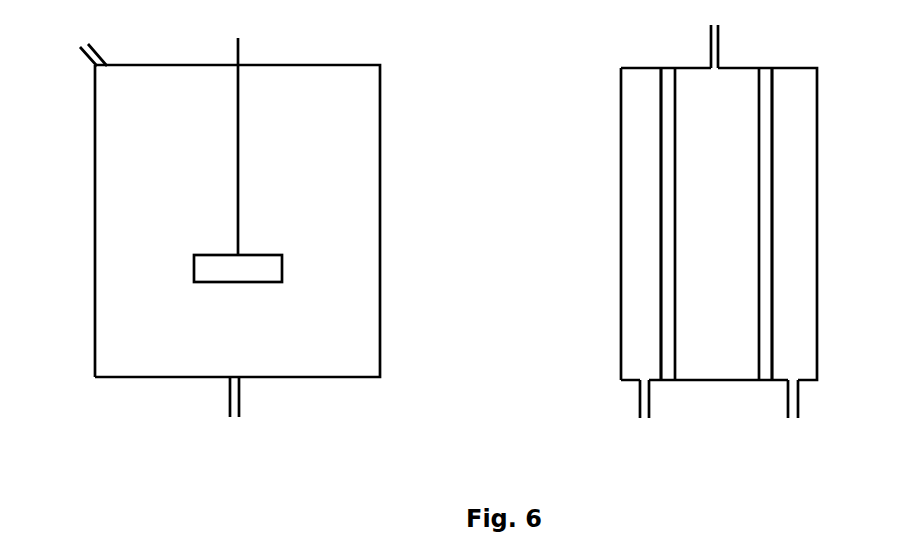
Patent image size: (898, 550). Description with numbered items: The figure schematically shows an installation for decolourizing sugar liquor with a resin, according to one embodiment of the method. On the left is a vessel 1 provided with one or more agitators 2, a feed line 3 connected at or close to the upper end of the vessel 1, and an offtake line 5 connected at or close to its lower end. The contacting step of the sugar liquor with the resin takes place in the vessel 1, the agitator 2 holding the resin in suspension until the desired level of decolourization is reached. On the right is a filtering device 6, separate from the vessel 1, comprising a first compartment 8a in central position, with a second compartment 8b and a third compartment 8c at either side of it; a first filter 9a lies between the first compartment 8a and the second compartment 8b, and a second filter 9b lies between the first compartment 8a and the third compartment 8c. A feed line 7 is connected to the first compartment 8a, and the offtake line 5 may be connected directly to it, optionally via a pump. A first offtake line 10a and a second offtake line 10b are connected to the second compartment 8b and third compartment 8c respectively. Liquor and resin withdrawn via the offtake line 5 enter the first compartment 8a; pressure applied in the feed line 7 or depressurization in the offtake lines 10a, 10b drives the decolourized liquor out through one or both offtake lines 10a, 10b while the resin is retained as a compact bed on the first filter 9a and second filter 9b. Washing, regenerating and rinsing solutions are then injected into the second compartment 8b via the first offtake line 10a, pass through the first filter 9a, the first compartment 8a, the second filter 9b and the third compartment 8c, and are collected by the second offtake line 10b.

The vessel 1 is at (386, 104).
The agitator 2 is at (185, 260).
The feed line 3 is at (84, 70).
The offtake line 5 is at (222, 405).
The filtering device 6 is at (820, 195).
The feed line 7 is at (706, 33).
The first compartment 8a is at (717, 224).
The second compartment 8b is at (645, 224).
The third compartment 8c is at (791, 224).
The first filter 9a is at (658, 143).
The second filter 9b is at (775, 149).
The first offtake line 10a is at (637, 408).
The second offtake line 10b is at (832, 422).